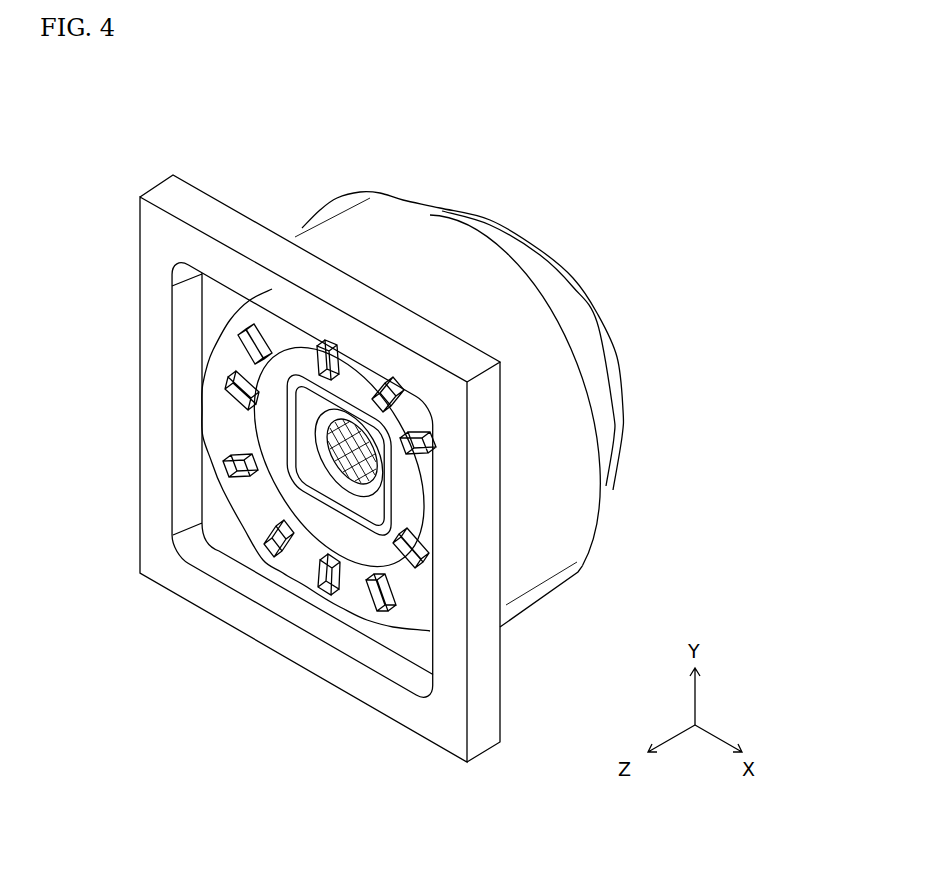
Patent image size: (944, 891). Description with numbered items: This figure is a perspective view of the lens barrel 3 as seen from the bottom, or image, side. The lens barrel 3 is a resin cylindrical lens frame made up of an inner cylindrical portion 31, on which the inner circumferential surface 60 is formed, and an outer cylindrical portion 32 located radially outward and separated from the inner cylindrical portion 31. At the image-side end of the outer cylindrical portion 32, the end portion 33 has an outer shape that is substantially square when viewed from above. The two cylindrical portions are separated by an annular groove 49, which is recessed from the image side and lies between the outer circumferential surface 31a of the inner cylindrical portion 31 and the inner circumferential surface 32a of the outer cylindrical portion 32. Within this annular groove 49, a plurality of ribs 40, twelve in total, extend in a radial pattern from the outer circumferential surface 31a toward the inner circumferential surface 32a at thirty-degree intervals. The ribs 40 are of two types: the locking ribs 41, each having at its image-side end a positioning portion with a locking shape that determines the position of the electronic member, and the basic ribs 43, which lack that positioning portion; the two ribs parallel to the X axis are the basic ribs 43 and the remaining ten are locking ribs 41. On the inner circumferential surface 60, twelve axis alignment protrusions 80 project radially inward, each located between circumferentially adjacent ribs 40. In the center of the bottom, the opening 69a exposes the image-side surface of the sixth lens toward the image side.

The lens barrel 3 is at (110, 109).
The inner cylindrical portion 31 is at (486, 418).
The outer circumferential surface 31a is at (445, 478).
The outer cylindrical portion 32 is at (535, 606).
The inner circumferential surface 32a is at (218, 356).
The end portion 33 is at (313, 468).
The ribs 40 is at (381, 426).
The locking rib 41 is at (428, 430).
The basic rib 43 is at (235, 393).
The annular groove 49 is at (237, 432).
The inner circumferential surface 60 is at (388, 468).
The axis alignment protrusions 80 is at (518, 452).
The opening 69a is at (320, 422).